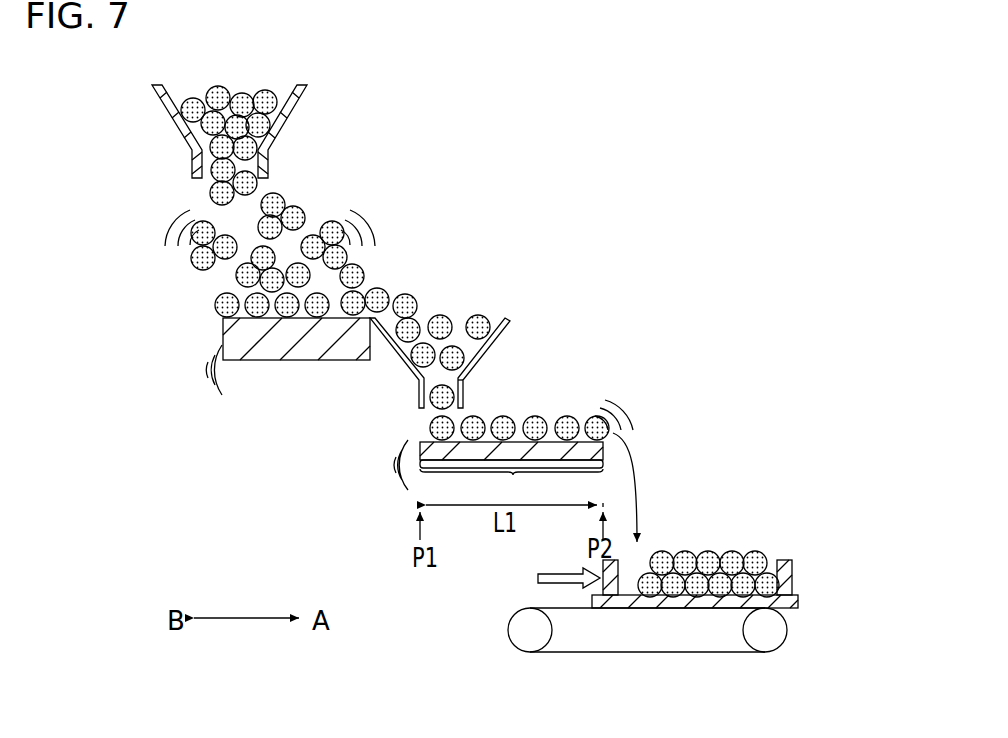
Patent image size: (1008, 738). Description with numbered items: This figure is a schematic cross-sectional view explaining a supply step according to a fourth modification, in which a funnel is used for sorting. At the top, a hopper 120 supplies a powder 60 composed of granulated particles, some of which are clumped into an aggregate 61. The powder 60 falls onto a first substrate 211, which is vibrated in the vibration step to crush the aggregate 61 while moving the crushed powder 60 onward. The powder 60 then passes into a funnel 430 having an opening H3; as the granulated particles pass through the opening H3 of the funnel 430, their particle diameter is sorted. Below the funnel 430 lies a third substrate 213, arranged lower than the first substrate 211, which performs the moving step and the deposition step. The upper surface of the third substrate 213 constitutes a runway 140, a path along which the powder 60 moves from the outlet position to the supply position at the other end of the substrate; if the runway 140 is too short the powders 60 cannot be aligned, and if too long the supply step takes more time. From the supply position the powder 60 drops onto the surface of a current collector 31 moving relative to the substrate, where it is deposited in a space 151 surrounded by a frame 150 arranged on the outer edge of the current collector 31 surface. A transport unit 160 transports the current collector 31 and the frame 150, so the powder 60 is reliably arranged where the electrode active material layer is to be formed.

The powder 60 is at (217, 97).
The aggregate 61 is at (300, 207).
The hopper 120 is at (168, 112).
The first substrate 211 is at (268, 350).
The funnel 430 is at (508, 320).
The opening H3 is at (460, 380).
The third substrate 213 is at (552, 427).
The runway 140 is at (511, 487).
The space 151 is at (628, 587).
The frame 150 is at (785, 558).
The current collector 31 is at (793, 597).
The transport unit 160 is at (508, 627).